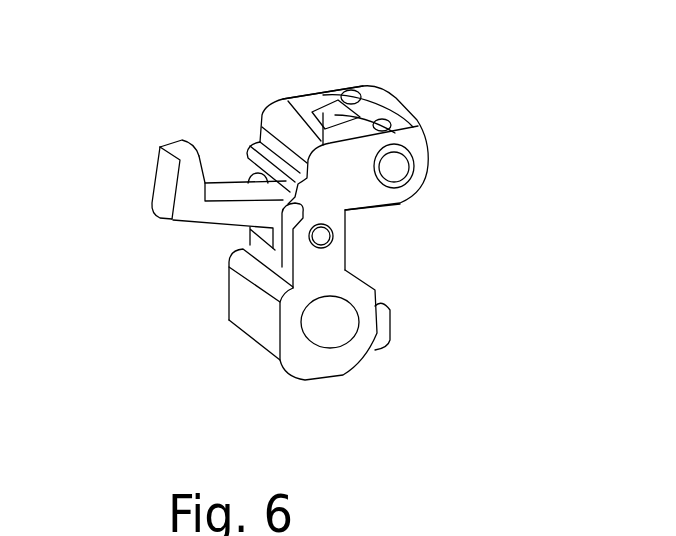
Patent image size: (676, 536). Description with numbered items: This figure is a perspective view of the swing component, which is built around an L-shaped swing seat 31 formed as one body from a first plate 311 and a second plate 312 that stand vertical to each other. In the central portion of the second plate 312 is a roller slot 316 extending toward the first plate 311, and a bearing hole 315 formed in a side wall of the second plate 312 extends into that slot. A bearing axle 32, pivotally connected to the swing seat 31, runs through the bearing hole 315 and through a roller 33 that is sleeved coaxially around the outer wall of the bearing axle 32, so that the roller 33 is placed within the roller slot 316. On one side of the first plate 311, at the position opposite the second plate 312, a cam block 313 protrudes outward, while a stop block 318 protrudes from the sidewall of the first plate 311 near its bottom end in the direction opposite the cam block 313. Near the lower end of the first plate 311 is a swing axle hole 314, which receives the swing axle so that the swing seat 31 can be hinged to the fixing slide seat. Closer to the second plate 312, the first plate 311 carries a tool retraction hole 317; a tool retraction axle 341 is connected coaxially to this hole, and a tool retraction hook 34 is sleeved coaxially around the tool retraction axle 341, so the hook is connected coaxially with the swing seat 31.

The swing seat 31 is at (233, 307).
The first plate 311 is at (290, 262).
The second plate 312 is at (308, 103).
The cam block 313 is at (252, 143).
The swing axle hole 314 is at (330, 337).
The bearing hole 315 is at (412, 150).
The roller slot 316 is at (327, 110).
The tool retraction hole 317 is at (333, 225).
The stop block 318 is at (383, 337).
The bearing axle 32 is at (397, 177).
The roller 33 is at (375, 103).
The tool retraction hook 34 is at (178, 145).
The tool retraction axle 341 is at (330, 246).